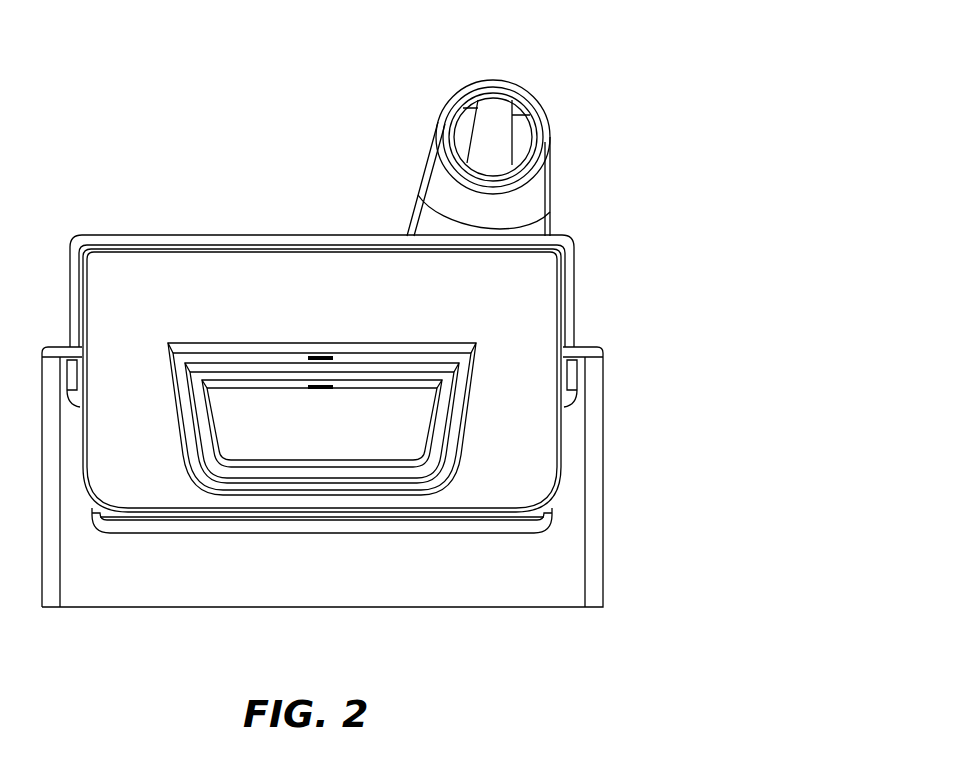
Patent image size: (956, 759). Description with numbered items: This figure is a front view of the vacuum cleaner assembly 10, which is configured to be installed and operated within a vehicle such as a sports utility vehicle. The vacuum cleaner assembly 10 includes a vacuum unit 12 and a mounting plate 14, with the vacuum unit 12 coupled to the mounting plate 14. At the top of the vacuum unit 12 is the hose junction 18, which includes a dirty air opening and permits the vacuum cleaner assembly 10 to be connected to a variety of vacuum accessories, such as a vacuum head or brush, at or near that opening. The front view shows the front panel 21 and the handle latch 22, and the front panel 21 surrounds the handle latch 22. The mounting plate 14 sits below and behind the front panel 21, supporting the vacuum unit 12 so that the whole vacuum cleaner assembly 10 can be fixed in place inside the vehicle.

The vacuum cleaner assembly 10 is at (113, 140).
The vacuum unit 12 is at (541, 202).
The mounting plate 14 is at (517, 580).
The hose junction 18 is at (495, 130).
The front panel 21 is at (460, 303).
The handle latch 22 is at (445, 413).